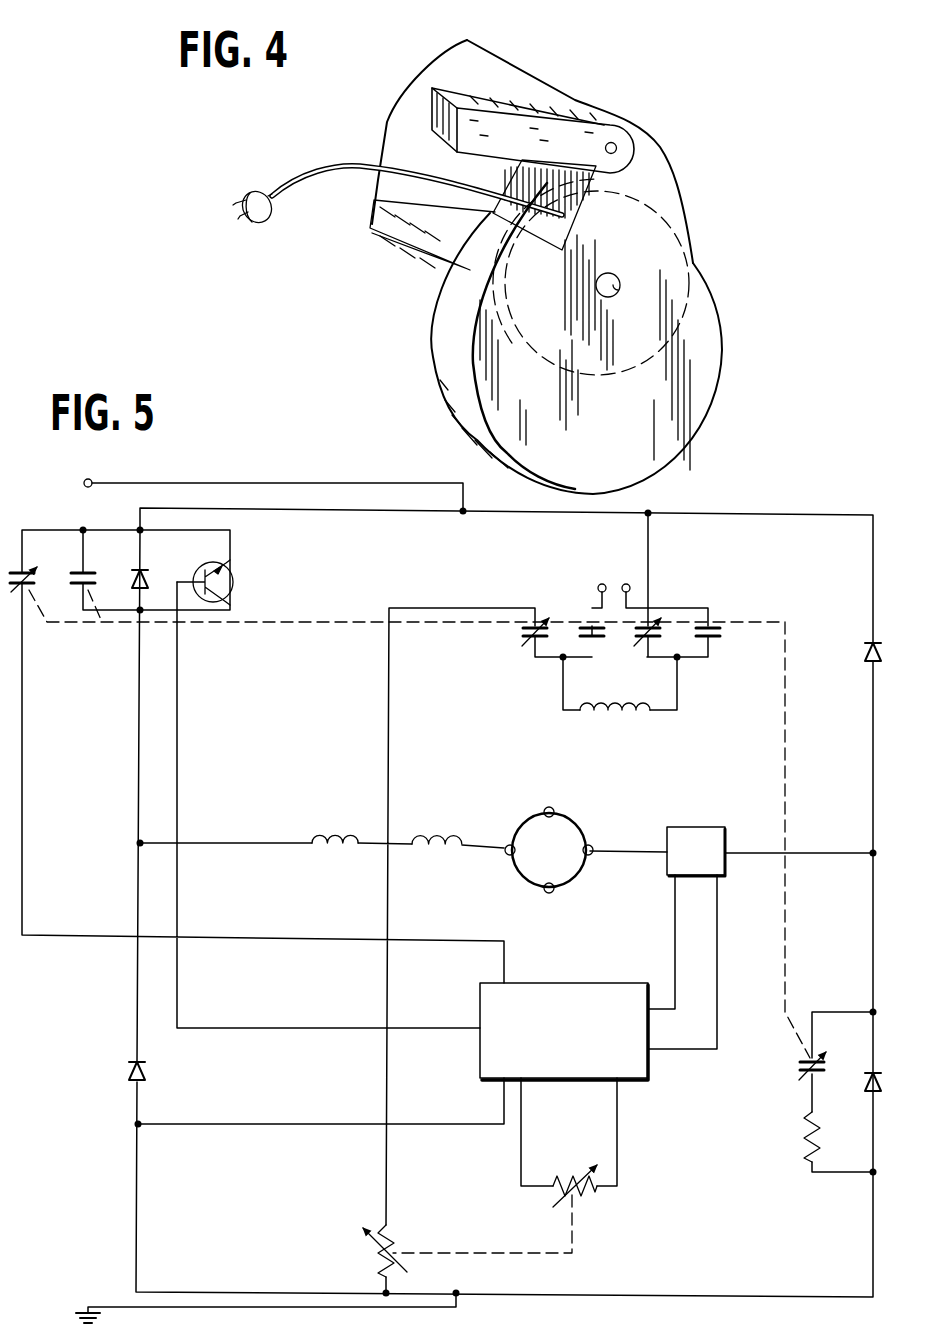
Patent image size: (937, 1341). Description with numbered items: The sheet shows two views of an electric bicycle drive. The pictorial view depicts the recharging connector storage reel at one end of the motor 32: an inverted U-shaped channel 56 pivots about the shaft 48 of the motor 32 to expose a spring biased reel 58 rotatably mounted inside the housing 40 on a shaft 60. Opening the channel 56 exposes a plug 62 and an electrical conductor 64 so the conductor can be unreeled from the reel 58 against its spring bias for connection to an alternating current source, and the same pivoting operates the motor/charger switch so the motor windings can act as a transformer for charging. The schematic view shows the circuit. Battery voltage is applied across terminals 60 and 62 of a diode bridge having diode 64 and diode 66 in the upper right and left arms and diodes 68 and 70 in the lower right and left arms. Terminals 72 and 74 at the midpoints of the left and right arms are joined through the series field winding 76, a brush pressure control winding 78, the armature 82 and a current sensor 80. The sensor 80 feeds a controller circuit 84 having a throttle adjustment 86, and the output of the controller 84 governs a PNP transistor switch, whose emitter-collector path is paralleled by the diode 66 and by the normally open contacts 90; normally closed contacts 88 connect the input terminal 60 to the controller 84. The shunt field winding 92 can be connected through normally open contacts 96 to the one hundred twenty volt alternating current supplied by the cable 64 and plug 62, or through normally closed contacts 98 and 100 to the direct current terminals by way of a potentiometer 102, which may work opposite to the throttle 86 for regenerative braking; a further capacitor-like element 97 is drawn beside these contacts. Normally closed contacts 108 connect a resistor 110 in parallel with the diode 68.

In FIG. 4, the motor 32 is at (518, 38).
In FIG. 4, the inverted U-shaped channel 56 is at (576, 108).
In FIG. 4, the shaft of the motor 48 is at (618, 146).
In FIG. 4, the electrical conductor 64 is at (322, 175).
In FIG. 5, the electrical conductor 64 is at (868, 648).
In FIG. 4, the plug 62 is at (264, 222).
In FIG. 4, the housing 40 is at (694, 256).
In FIG. 4, the spring biased reel 58 is at (688, 280).
In FIG. 4, the shaft 60 is at (621, 281).
In FIG. 5, the shaft 60 is at (90, 479).
In FIG. 5, the normally closed contacts of the motor/charger switch 88 is at (28, 572).
In FIG. 5, the normally open electrical contacts of the motor/charger switch 90 is at (86, 572).
In FIG. 5, the diode 66 is at (198, 552).
In FIG. 5, the normally closed contacts of the motor/charger switch 98 is at (528, 642).
In FIG. 5, the capacitor 97 is at (598, 638).
In FIG. 5, the normally closed contacts of the motor/charger switch 100 is at (655, 624).
In FIG. 5, the normally open contacts of the motor/charger switch 96 is at (713, 627).
In FIG. 5, the shunt field winding 92 is at (608, 718).
In FIG. 5, the terminal 72 is at (137, 843).
In FIG. 5, the series field winding 76 is at (336, 836).
In FIG. 5, the brush pressure control winding 78 is at (456, 836).
In FIG. 5, the armature 82 is at (580, 832).
In FIG. 5, the current sensor 80 is at (725, 840).
In FIG. 5, the terminal 74 is at (870, 851).
In FIG. 5, the controller circuit 84 is at (570, 983).
In FIG. 5, the throttle adjustment 86 is at (590, 1194).
In FIG. 5, the potentiometer 102 is at (376, 1252).
In FIG. 5, the diode 70 is at (145, 1072).
In FIG. 5, the normally closed contacts of the motor/charger switch 108 is at (806, 1078).
In FIG. 5, the resistor 110 is at (808, 1140).
In FIG. 5, the diode 68 is at (868, 1090).